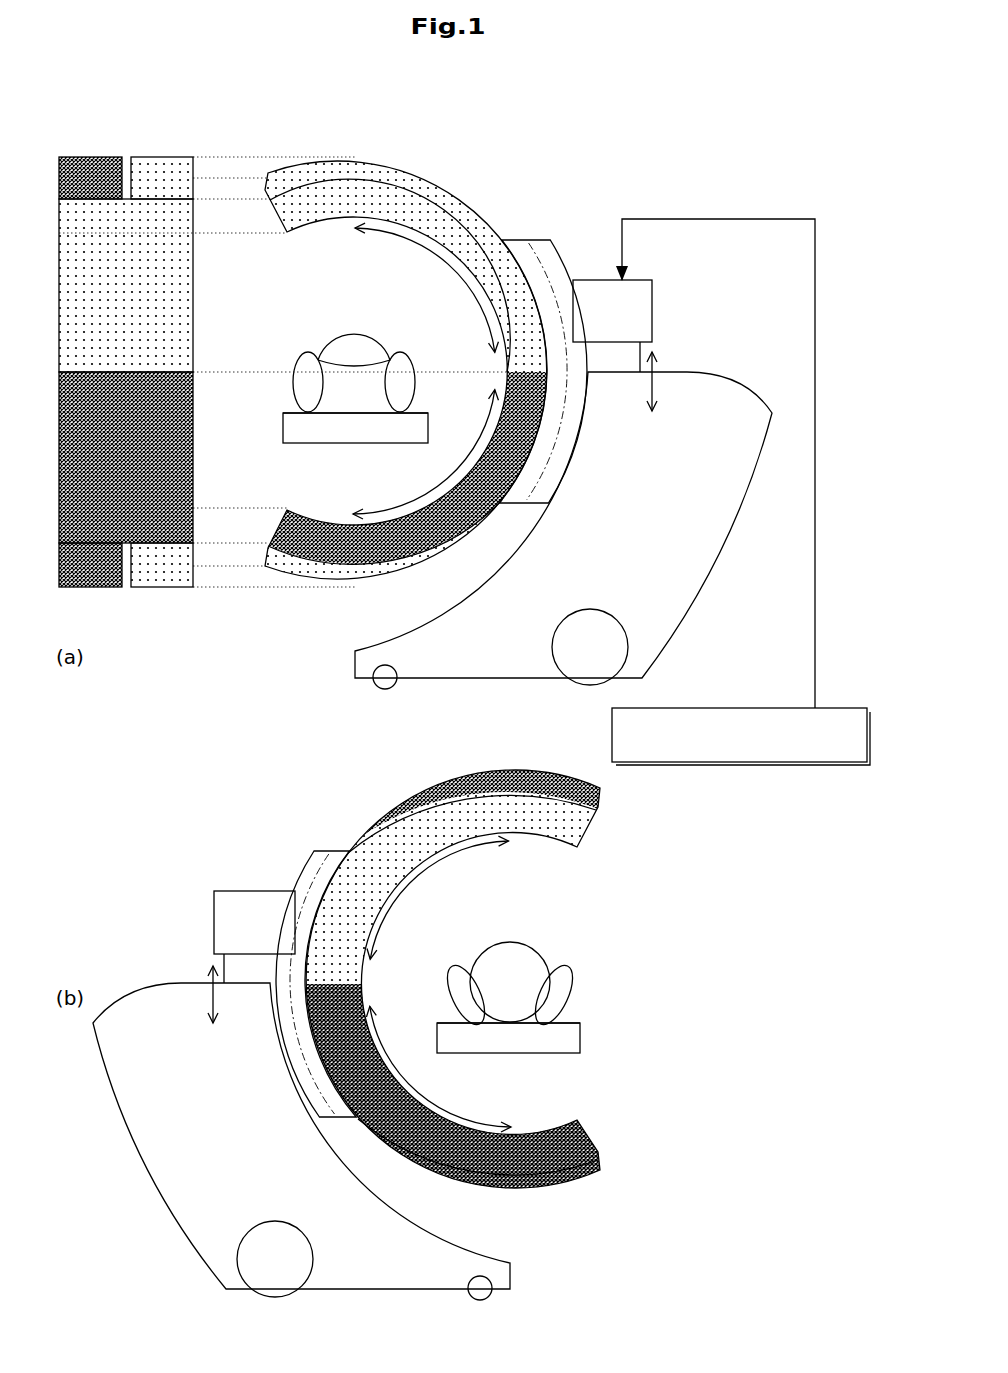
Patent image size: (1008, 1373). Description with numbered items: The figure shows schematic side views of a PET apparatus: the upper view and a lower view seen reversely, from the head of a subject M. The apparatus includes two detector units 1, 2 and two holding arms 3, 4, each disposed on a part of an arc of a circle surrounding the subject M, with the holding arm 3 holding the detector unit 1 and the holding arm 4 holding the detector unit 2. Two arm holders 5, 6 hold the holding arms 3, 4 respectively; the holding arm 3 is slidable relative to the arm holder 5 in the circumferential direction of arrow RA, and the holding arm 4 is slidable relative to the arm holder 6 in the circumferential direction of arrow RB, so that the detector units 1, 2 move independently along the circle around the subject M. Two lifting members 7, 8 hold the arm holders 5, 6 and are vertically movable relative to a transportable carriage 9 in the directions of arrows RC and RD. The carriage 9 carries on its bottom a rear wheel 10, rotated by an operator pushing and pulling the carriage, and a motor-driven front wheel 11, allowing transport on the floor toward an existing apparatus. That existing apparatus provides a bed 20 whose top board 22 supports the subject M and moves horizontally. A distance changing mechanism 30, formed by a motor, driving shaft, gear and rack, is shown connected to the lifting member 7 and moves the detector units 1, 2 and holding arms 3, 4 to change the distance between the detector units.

The detector unit 1 is at (195, 291).
The detector unit 2 is at (195, 429).
The holding arm 3 is at (165, 156).
The holding arm 4 is at (88, 156).
The arm holder 5 is at (558, 270).
The arm holder 6 is at (305, 882).
The lifting member 7 is at (645, 299).
The lifting member 8 is at (214, 908).
The carriage 9 is at (752, 444).
The rear wheel 10 is at (620, 647).
The front wheel 11 is at (383, 665).
The bed 20 is at (281, 432).
The top board 22 is at (366, 445).
The distance changing mechanism 30 is at (757, 706).
The subject M is at (335, 340).
The arrow RA is at (408, 240).
The arrow RB is at (430, 490).
The arrow RC is at (655, 368).
The arrow RD is at (208, 976).